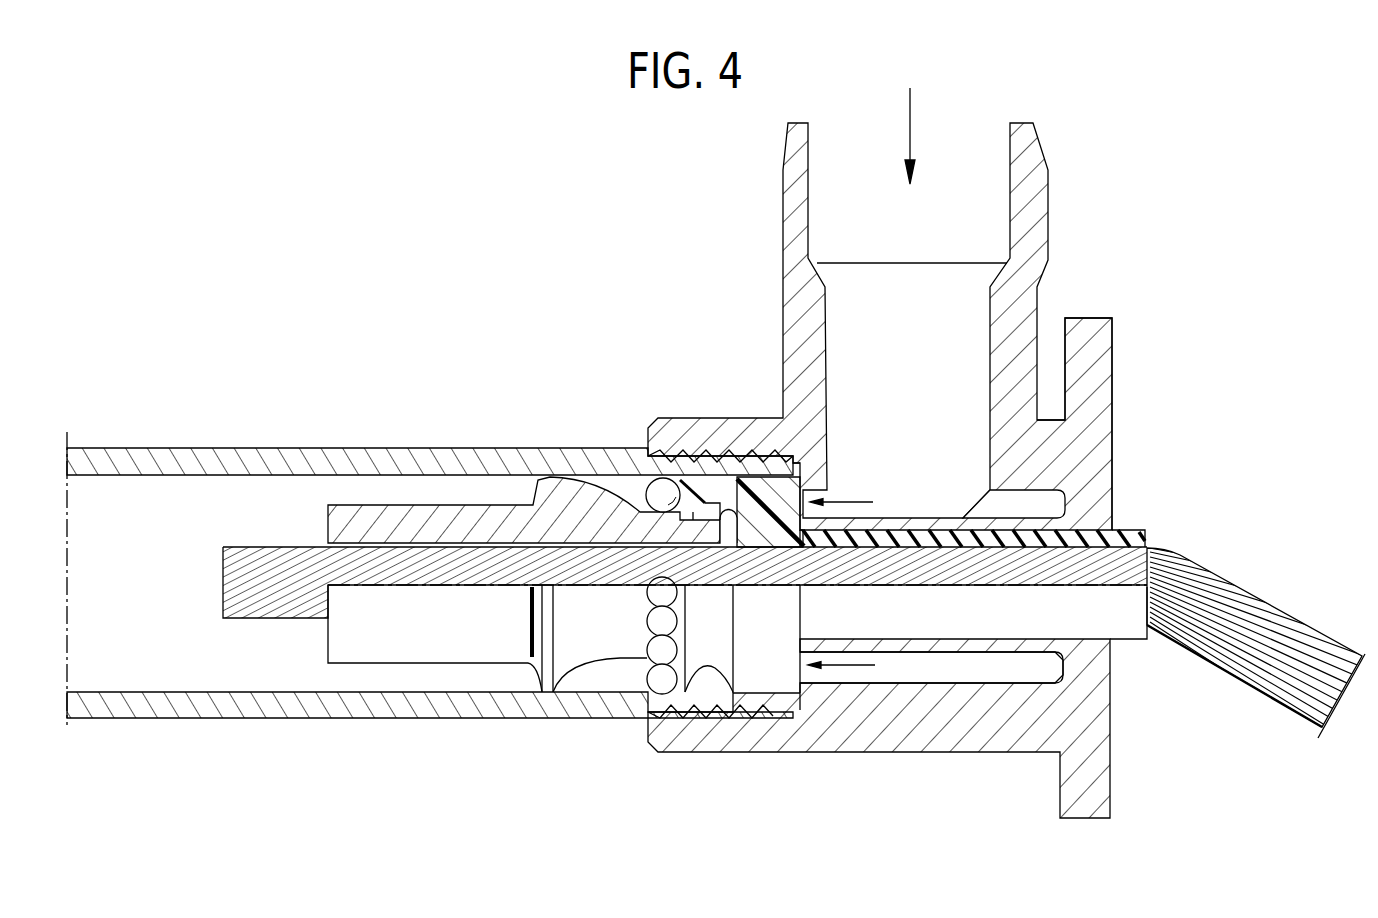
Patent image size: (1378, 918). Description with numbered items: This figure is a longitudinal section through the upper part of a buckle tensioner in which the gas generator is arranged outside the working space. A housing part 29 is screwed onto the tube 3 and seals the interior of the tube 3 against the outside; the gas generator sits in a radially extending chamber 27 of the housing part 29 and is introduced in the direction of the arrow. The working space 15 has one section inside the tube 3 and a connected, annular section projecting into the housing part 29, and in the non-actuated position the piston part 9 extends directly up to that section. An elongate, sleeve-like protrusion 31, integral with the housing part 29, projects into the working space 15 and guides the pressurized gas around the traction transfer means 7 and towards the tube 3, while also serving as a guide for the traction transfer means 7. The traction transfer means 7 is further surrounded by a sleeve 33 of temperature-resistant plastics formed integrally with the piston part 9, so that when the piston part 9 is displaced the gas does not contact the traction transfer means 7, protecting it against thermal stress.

The tube 3 is at (358, 470).
The traction transfer means 7 is at (1213, 615).
The piston part 9 is at (760, 670).
The working space 15 is at (1048, 510).
The chamber 27 is at (967, 337).
The housing part 29 is at (1085, 397).
The protrusion 31 is at (992, 645).
The sleeve 33 is at (923, 620).